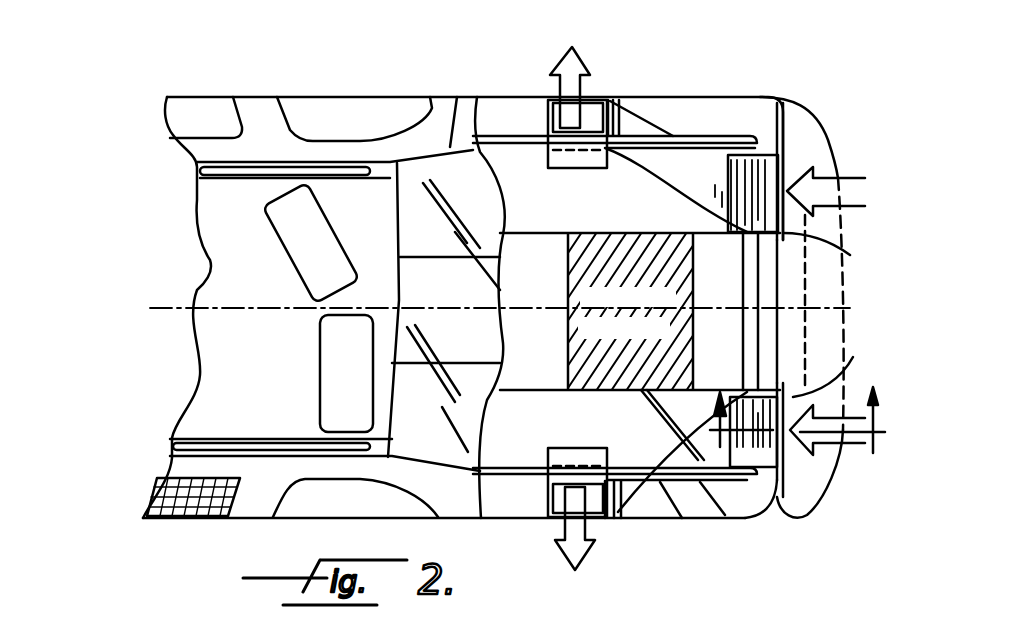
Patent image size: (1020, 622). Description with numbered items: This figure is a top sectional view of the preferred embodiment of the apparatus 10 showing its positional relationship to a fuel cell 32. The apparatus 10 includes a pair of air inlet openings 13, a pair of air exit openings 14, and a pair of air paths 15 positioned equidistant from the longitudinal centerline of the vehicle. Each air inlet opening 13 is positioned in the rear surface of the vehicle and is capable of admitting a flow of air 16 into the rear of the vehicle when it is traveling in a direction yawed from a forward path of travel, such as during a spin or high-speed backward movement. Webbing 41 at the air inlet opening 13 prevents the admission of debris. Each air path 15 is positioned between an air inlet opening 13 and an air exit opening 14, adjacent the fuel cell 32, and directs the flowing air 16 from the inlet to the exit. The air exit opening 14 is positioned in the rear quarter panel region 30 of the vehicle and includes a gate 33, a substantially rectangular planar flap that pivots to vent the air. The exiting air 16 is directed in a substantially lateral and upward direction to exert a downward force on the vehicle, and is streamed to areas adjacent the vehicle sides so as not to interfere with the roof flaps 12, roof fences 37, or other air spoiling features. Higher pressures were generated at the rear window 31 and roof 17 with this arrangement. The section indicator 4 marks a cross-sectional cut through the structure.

The apparatus 10 is at (178, 75).
The roof flaps 12 is at (312, 262).
The air inlet opening 13 is at (810, 152).
The air exit opening 14 is at (596, 108).
The air path 15 is at (717, 165).
The flow of air 16 is at (560, 77).
The roof 17 is at (205, 342).
The rear quarter panel region 30 is at (698, 75).
The rear window 31 is at (423, 187).
The fuel cell 32 is at (572, 357).
The gate 33 is at (583, 168).
The roof fences 37 is at (225, 182).
The webbing 41 is at (839, 315).
The section line 4 is at (797, 436).